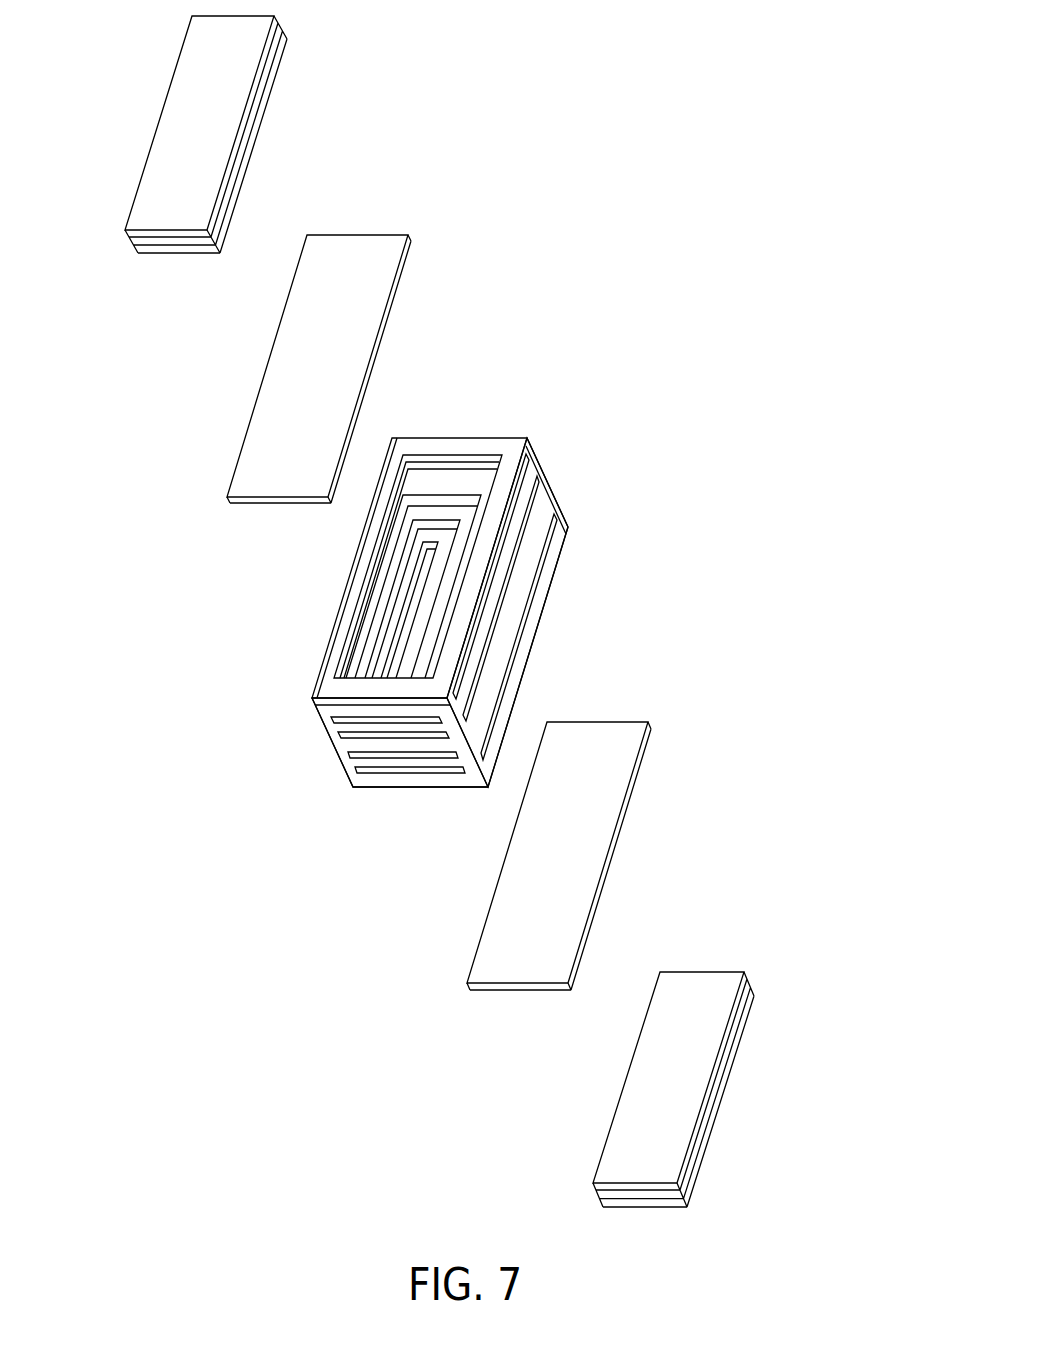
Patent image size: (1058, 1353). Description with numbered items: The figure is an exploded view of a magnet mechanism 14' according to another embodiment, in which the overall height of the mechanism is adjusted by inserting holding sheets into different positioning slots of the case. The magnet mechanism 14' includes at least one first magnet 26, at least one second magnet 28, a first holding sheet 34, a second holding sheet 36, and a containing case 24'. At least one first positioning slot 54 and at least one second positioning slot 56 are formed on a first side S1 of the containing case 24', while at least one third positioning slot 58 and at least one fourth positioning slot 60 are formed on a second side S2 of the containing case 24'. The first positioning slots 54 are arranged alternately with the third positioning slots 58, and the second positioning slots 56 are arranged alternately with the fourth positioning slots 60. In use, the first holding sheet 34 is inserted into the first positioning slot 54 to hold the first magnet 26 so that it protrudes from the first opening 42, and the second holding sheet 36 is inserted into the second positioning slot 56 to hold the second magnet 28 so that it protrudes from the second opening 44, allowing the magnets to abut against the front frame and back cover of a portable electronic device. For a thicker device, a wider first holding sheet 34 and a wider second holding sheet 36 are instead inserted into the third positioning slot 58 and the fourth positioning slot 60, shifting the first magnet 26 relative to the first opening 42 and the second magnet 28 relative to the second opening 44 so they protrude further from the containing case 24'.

The magnet mechanism 14' is at (484, 603).
The first magnet 26 is at (203, 180).
The second magnet 28 is at (710, 985).
The first holding sheet 34 is at (290, 396).
The second holding sheet 36 is at (513, 928).
The containing case 24' is at (416, 582).
The first opening 42 is at (428, 458).
The second opening 44 is at (425, 598).
The first positioning slot 54 is at (333, 718).
The second positioning slot 56 is at (358, 770).
The third positioning slot 58 is at (528, 462).
The fourth positioning slot 60 is at (568, 525).
The first side S1 is at (325, 710).
The second side S2 is at (547, 495).